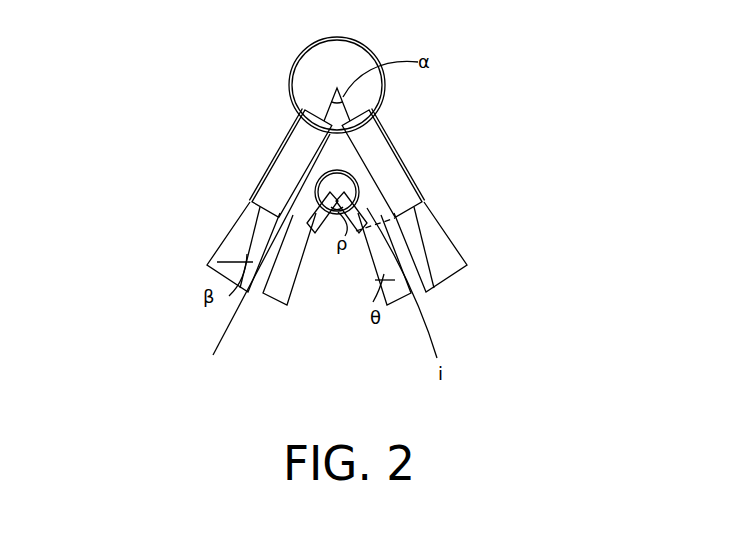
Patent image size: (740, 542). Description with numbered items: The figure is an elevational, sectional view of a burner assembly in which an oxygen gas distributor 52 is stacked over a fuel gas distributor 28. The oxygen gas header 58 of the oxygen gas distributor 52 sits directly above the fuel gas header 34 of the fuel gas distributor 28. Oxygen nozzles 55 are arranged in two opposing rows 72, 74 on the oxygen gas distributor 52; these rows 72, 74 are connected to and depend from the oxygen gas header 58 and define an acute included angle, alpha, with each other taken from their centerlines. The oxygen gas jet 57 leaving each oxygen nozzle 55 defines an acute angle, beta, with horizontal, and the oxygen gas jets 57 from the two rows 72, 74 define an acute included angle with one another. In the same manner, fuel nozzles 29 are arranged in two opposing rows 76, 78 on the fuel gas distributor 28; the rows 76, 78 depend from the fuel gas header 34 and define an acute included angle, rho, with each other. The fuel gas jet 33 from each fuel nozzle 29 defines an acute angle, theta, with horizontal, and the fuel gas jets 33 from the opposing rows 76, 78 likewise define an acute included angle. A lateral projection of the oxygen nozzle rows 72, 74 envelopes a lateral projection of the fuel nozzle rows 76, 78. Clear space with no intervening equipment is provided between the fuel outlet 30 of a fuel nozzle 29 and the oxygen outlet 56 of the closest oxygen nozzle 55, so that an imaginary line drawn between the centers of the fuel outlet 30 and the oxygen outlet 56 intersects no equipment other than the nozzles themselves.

The fuel gas distributor 28 is at (260, 261).
The fuel nozzle 29 is at (330, 220).
The fuel outlet 30 is at (314, 248).
The fuel gas jet 33 is at (261, 290).
The fuel gas header 34 is at (374, 182).
The oxygen gas distributor 52 is at (351, 50).
The oxygen nozzle 55 is at (398, 158).
The oxygen outlet 56 is at (422, 205).
The oxygen gas jet 57 is at (440, 237).
The oxygen gas header 58 is at (321, 78).
The row of oxygen nozzles 72 is at (480, 290).
The row of oxygen nozzles 74 is at (186, 316).
The row of fuel nozzles 76 is at (285, 332).
The row of fuel nozzles 78 is at (402, 330).